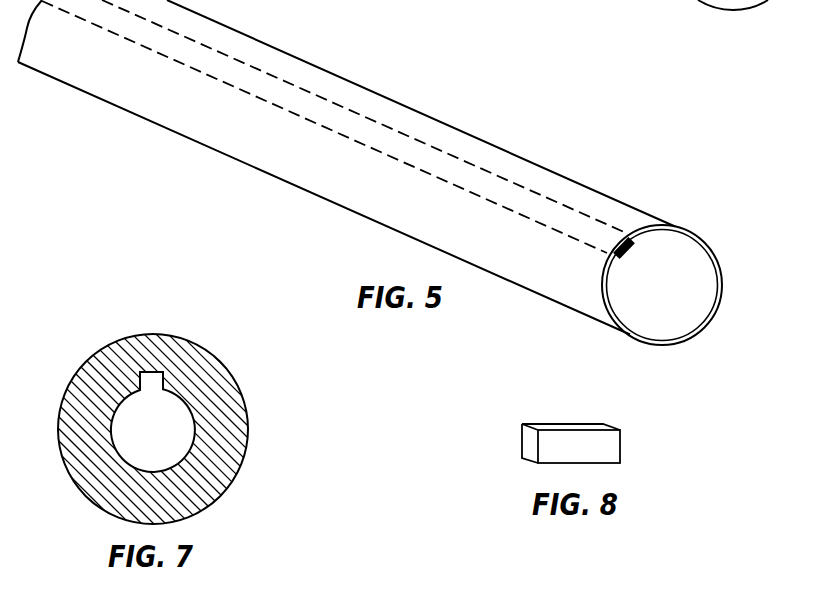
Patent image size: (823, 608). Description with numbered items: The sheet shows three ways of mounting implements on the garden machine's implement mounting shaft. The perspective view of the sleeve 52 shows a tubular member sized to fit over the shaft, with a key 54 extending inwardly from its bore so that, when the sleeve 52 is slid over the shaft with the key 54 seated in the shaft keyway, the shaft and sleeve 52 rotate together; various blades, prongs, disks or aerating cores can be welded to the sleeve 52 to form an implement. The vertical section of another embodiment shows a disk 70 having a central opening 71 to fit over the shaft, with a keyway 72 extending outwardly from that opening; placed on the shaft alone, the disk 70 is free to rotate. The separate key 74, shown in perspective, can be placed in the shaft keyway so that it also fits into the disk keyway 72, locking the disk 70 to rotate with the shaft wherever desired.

In FIG. 5, the sleeve 52 is at (682, 225).
In FIG. 5, the key 54 is at (627, 258).
In FIG. 7, the disk 70 is at (203, 370).
In FIG. 7, the central opening 71 is at (178, 427).
In FIG. 7, the keyway 72 is at (155, 378).
In FIG. 8, the key 74 is at (590, 450).